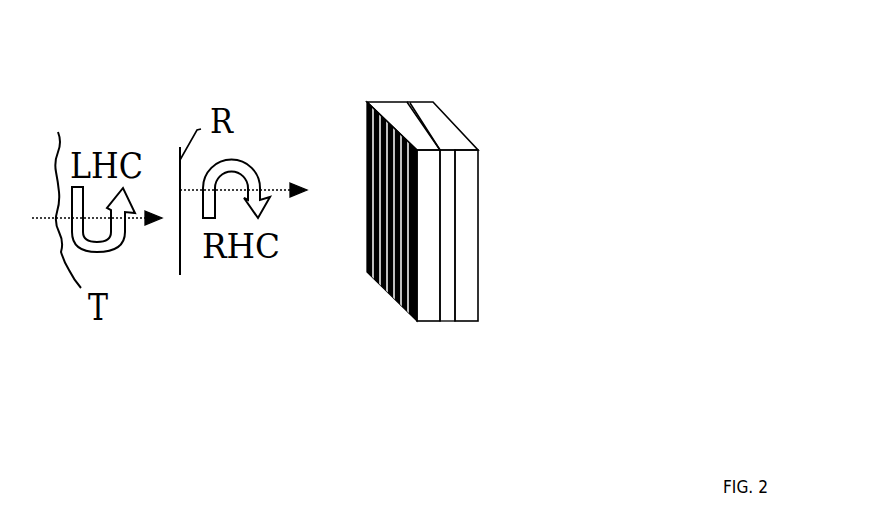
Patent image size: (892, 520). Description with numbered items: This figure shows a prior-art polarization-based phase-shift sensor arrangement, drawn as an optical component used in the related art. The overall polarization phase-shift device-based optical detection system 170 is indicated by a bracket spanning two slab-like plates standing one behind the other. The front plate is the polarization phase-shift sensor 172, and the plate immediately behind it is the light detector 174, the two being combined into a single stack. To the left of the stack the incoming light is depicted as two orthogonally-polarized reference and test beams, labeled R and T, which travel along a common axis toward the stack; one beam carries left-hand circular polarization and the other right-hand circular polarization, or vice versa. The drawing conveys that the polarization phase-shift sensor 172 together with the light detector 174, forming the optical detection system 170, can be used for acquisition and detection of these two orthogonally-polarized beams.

The polarization phase-shift device-based optical detection system 170 is at (502, 98).
The polarization phase-shift sensor 172 is at (398, 311).
The light detector 174 is at (477, 307).